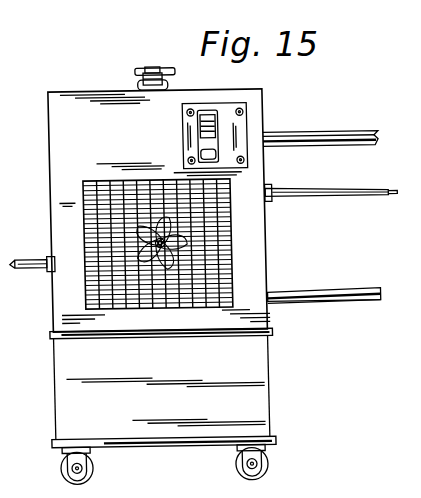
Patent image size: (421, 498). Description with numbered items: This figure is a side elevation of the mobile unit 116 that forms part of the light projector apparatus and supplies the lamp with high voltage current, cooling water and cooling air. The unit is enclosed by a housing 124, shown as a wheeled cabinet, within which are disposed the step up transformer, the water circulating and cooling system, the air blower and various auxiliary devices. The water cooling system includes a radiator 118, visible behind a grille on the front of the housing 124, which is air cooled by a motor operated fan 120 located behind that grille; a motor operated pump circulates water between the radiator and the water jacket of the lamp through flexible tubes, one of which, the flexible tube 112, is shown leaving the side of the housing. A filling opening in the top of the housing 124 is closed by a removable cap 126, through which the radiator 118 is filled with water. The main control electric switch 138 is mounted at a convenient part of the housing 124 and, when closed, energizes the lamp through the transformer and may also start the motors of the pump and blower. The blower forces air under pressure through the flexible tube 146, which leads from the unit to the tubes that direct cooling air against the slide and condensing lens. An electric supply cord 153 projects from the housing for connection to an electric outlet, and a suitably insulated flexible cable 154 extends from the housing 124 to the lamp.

The flexible tube 112 is at (336, 308).
The mobile unit 116 is at (81, 87).
The radiator 118 is at (232, 261).
The motor operated fan 120 is at (233, 233).
The housing 124 is at (81, 139).
The removable cap 126 is at (158, 68).
The main control electric switch 138 is at (222, 127).
The flexible tube 146 is at (355, 135).
The electric supply cord 153 is at (32, 268).
The insulated flexible cable 154 is at (374, 200).